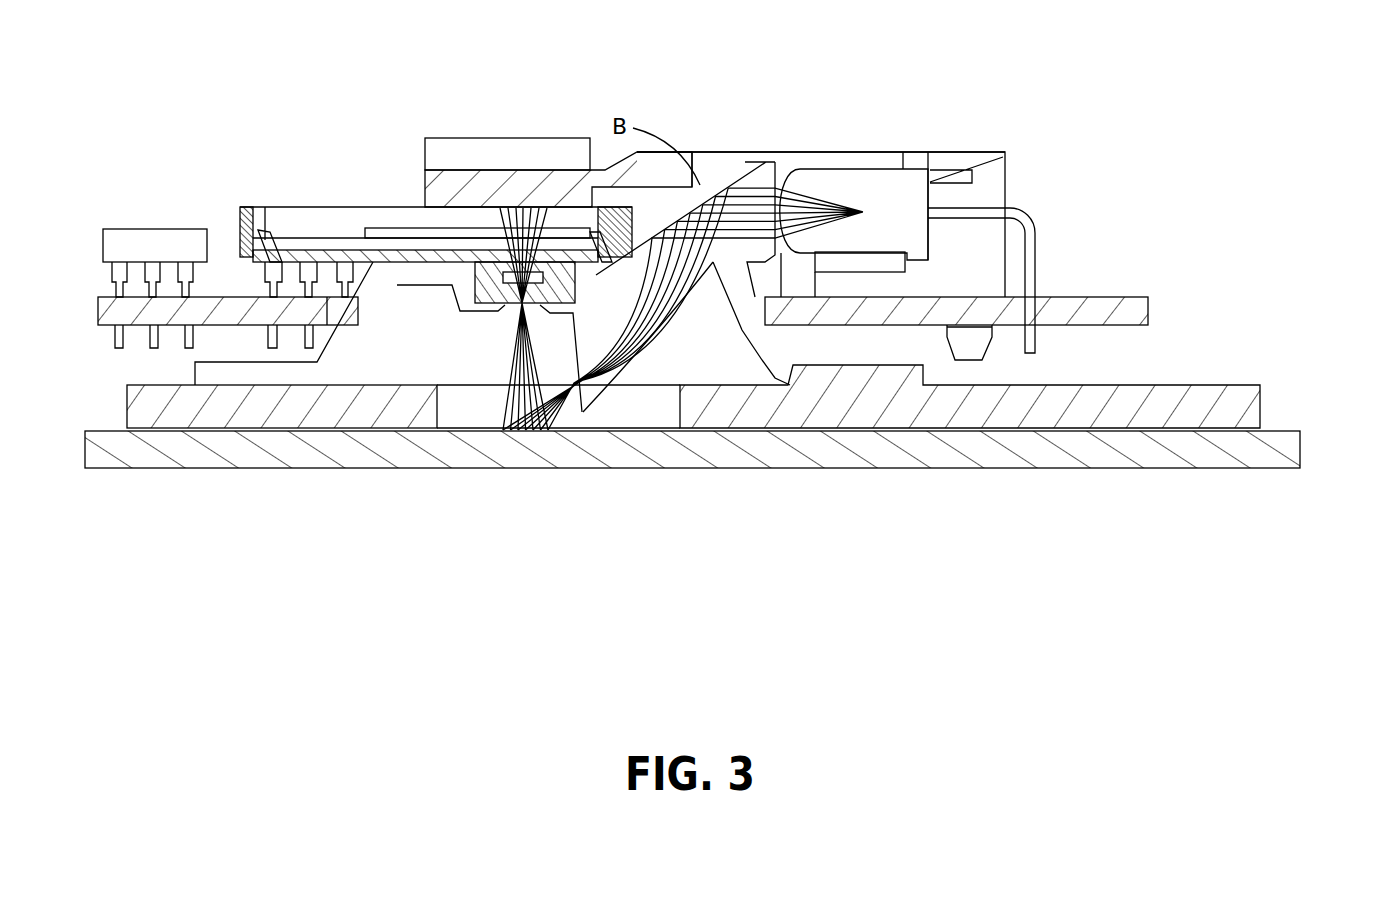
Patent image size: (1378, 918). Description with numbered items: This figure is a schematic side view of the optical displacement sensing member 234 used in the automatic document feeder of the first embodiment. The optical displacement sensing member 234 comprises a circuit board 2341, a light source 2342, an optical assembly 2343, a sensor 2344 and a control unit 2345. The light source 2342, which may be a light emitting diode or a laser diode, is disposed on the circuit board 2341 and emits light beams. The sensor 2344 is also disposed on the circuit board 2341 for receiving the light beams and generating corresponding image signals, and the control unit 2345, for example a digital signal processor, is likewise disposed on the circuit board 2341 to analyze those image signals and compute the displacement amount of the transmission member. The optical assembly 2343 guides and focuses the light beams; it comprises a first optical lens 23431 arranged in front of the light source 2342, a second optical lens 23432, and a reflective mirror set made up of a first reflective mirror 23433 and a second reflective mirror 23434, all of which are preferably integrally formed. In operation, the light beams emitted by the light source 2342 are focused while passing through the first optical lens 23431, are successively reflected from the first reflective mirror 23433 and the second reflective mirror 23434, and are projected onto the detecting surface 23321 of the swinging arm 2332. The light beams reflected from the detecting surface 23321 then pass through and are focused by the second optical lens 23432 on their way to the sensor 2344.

The optical displacement sensing member 234 is at (840, 130).
The circuit board 2341 is at (1097, 308).
The light source 2342 is at (878, 187).
The optical assembly 2343 is at (795, 372).
The first optical lens 23431 is at (773, 160).
The second optical lens 23432 is at (503, 307).
The first reflective mirror 23433 is at (643, 208).
The second reflective mirror 23434 is at (640, 357).
The sensor 2344 is at (405, 212).
The control unit 2345 is at (148, 242).
The swinging arm 2332 is at (1273, 442).
The detecting surface 23321 is at (478, 431).